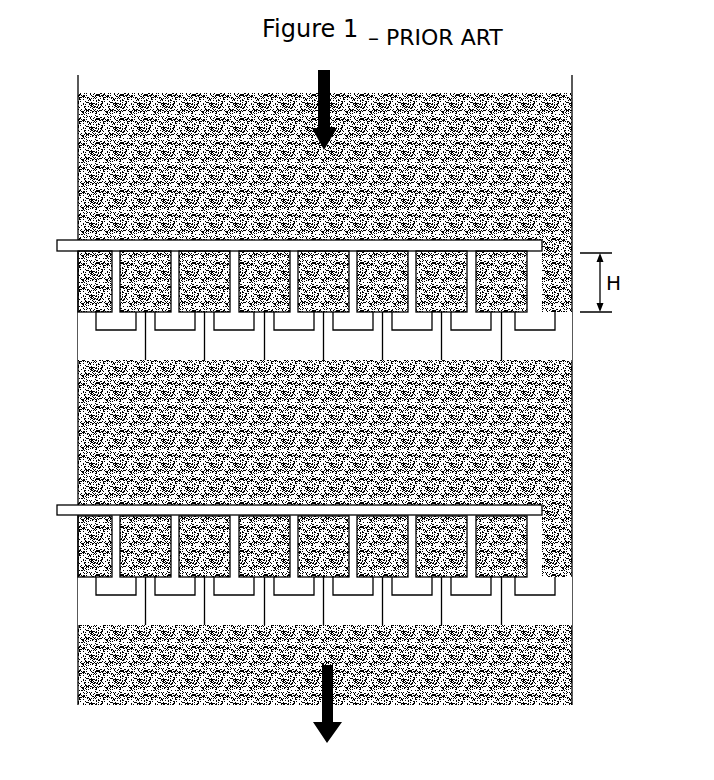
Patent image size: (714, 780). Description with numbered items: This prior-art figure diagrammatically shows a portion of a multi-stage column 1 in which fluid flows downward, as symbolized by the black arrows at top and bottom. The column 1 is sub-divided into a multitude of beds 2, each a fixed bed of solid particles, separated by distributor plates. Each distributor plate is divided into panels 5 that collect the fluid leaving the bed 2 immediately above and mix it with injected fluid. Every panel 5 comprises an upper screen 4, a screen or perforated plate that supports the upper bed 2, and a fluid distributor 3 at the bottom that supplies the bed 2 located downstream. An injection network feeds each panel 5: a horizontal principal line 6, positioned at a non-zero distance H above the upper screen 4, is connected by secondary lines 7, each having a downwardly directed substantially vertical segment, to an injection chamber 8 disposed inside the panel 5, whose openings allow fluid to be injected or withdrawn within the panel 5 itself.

The column 1 is at (573, 465).
The beds 2 is at (530, 170).
The fluid distributor 3 is at (548, 372).
The upper screen 4 is at (80, 318).
The panels 5 is at (148, 343).
The principal line 6 is at (100, 240).
The secondary line 7 is at (117, 283).
The injection chamber 8 is at (114, 319).